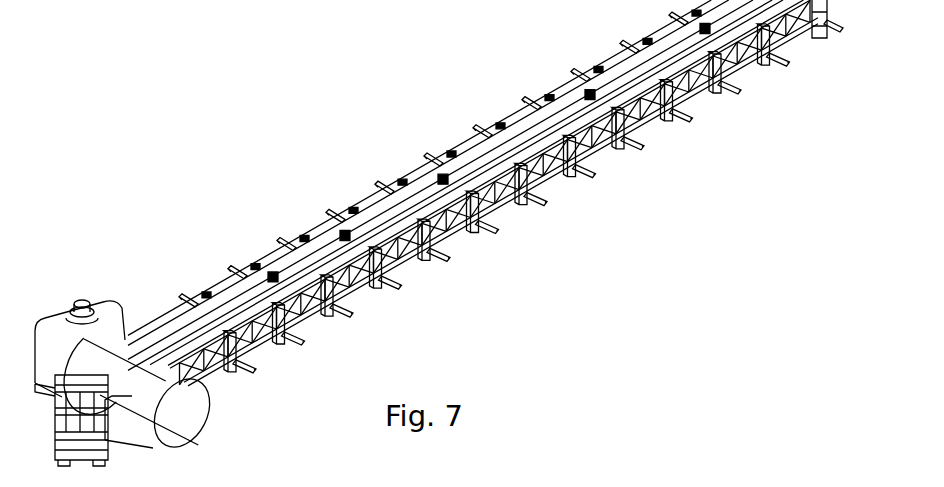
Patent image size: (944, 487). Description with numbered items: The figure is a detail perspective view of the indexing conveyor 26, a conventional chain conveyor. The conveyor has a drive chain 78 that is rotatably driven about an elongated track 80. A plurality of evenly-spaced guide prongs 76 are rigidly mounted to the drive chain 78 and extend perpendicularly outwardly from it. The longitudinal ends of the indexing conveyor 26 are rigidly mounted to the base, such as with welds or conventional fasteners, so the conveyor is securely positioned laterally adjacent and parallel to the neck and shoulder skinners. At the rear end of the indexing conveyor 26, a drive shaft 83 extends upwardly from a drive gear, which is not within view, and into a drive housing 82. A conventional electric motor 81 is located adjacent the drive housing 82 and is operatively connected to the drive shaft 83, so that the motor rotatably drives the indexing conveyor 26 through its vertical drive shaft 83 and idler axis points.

The indexing conveyor 26 is at (390, 91).
The guide prongs 76 is at (540, 197).
The drive chain 78 is at (602, 145).
The elongated track 80 is at (322, 236).
The electric motor 81 is at (182, 408).
The drive housing 82 is at (55, 337).
The drive shaft 83 is at (78, 308).